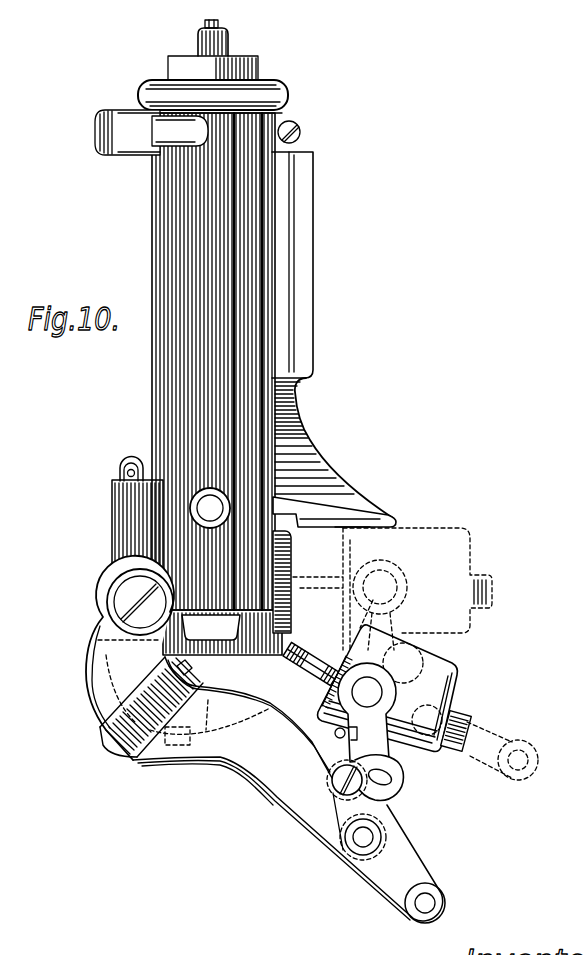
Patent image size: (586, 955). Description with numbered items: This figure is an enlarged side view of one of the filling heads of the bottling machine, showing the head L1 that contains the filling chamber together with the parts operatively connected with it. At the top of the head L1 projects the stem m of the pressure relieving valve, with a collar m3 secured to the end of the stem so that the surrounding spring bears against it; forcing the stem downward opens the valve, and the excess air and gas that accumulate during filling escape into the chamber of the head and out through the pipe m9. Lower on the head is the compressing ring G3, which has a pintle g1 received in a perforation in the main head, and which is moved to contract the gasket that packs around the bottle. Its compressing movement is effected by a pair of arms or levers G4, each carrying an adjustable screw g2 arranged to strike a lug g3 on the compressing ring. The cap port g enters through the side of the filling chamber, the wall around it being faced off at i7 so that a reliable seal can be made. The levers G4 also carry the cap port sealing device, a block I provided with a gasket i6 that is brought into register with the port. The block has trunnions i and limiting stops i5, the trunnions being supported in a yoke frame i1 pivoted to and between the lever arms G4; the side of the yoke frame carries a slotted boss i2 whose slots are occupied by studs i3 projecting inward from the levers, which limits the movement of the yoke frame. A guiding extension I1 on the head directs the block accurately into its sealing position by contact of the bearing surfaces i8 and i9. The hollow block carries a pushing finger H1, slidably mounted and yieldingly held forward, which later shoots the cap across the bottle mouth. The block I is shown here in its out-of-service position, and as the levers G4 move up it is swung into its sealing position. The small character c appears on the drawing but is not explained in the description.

The stem m is at (222, 23).
The collar m3 is at (229, 40).
The head L1 is at (244, 355).
The guiding extension I1 is at (372, 520).
The bearing surface i8 is at (350, 527).
The faced-off surface i7 is at (293, 568).
The cap port g is at (294, 578).
The pintle g1 is at (127, 459).
The adjustable screw g2 is at (192, 670).
The pipe m9 is at (197, 494).
The marking c is at (211, 572).
The lug g3 is at (211, 627).
The compressing ring G3 is at (159, 641).
The arm or lever G4 is at (272, 790).
The pushing finger H1 is at (311, 676).
The block I is at (428, 654).
The bearing surface i9 is at (427, 658).
The gasket i6 is at (352, 654).
The trunnion i is at (367, 712).
The yoke frame i1 is at (359, 740).
The limiting stop i5 is at (335, 737).
The slotted boss i2 is at (402, 779).
The stud i3 is at (332, 784).